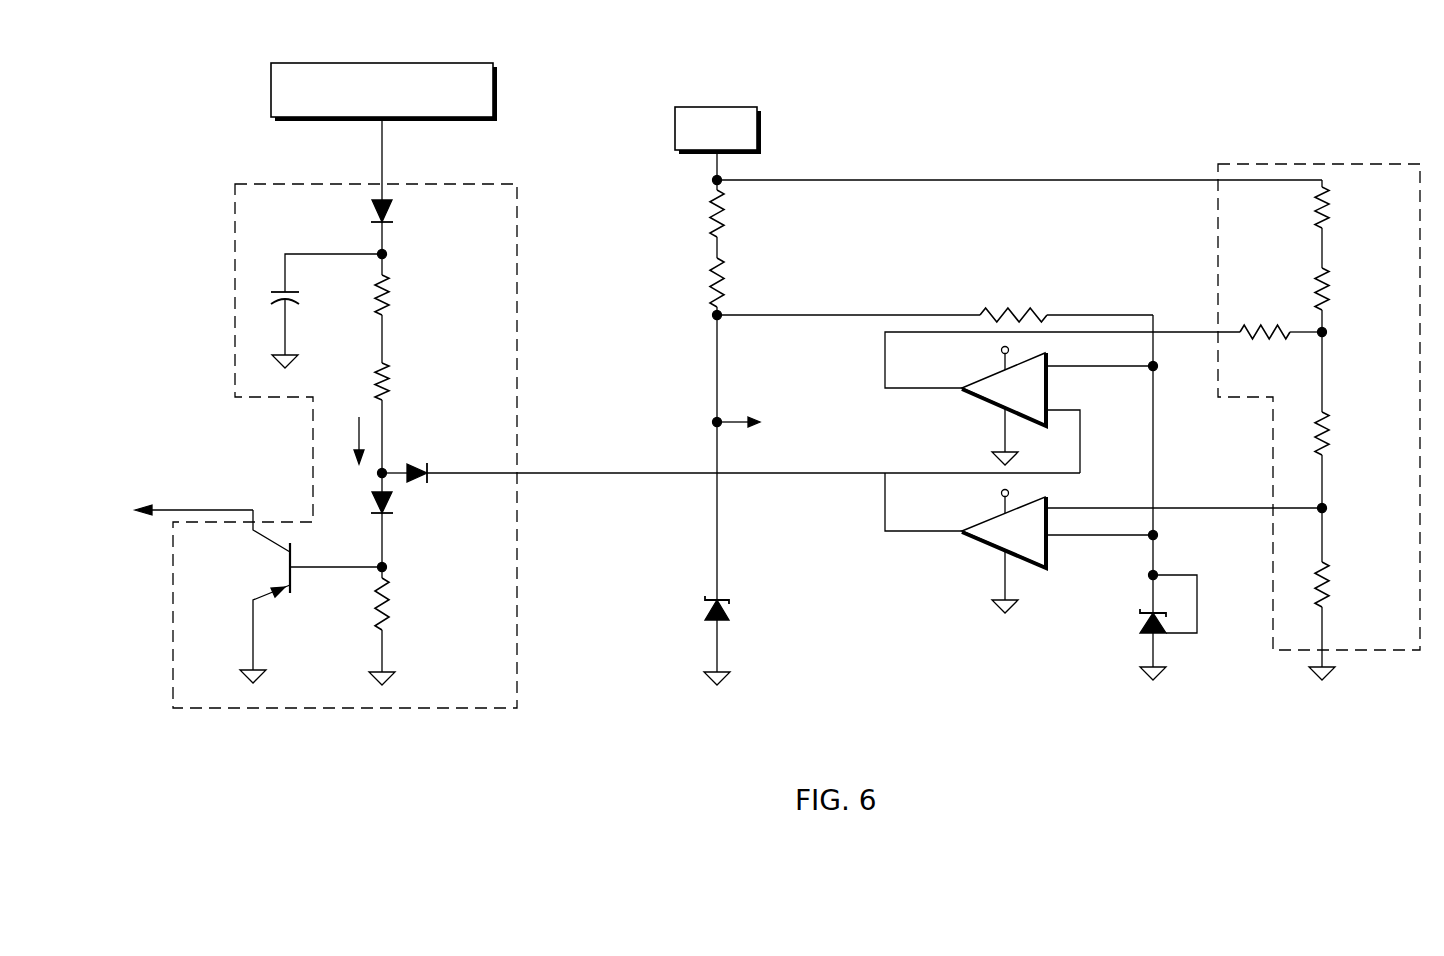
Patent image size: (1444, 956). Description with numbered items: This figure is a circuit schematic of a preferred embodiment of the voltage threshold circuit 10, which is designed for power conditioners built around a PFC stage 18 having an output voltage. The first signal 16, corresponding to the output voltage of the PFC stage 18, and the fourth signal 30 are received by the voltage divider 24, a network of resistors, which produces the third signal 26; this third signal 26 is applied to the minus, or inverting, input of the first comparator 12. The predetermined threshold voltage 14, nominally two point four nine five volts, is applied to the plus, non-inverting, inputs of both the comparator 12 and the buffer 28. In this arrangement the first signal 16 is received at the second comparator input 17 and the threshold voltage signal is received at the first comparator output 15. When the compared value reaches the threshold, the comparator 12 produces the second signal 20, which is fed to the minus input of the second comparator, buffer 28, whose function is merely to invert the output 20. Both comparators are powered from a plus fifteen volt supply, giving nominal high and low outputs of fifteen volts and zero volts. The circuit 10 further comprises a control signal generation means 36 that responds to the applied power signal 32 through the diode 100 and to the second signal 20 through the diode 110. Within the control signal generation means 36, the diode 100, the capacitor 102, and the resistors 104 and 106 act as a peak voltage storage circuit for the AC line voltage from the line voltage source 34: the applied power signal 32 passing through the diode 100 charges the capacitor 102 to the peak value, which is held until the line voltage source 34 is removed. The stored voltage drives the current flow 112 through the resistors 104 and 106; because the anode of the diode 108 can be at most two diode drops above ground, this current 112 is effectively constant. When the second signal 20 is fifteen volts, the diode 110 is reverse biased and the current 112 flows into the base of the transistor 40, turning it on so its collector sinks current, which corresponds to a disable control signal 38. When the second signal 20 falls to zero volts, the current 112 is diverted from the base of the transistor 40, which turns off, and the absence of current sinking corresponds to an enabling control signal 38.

The voltage threshold circuit 10 is at (1108, 720).
The comparator 12 is at (1000, 551).
The predetermined threshold voltage 14 is at (1068, 537).
The first comparator output 15 is at (1042, 580).
The first signal 16 is at (716, 179).
The second comparator input 17 is at (1060, 490).
The PFC stage 18 is at (717, 107).
The second signal 20 is at (1008, 539).
The voltage divider 24 is at (1403, 202).
The third signal 26 is at (1222, 508).
The buffer 28 is at (993, 403).
The fourth signal 30 is at (1050, 402).
The applied power signal 32 is at (382, 152).
The line voltage source 34 is at (396, 63).
The control signal generation means 36 is at (497, 692).
The control signal 38 is at (213, 504).
The transistor 40 is at (268, 553).
The diode 100 is at (398, 221).
The capacitor 102 is at (273, 290).
The resistor 104 is at (394, 287).
The resistor 106 is at (394, 374).
The diode 108 is at (392, 503).
The diode 110 is at (428, 463).
The current flow 112 is at (361, 432).